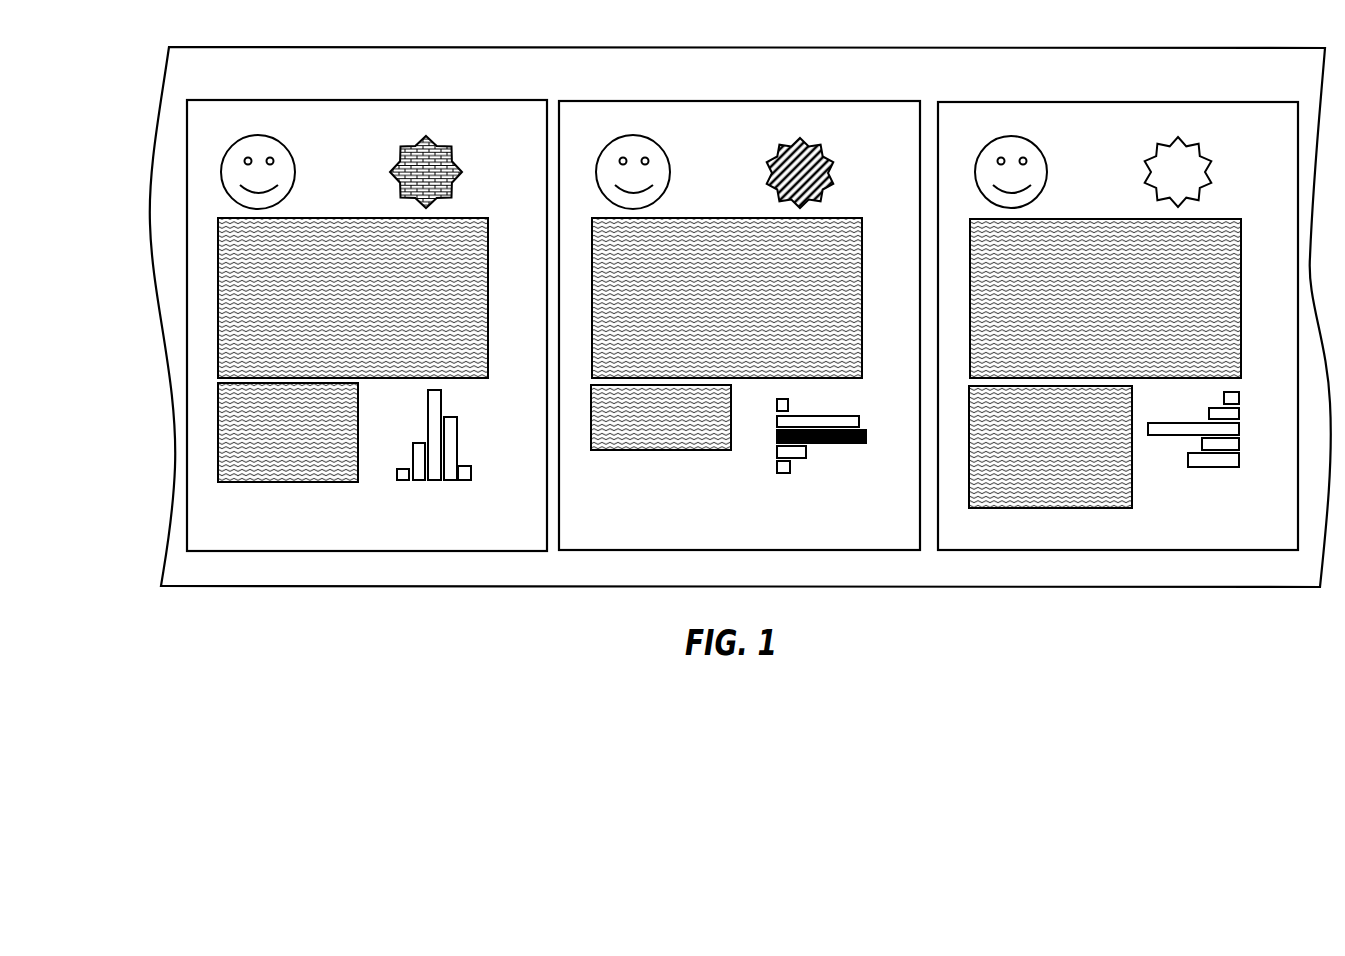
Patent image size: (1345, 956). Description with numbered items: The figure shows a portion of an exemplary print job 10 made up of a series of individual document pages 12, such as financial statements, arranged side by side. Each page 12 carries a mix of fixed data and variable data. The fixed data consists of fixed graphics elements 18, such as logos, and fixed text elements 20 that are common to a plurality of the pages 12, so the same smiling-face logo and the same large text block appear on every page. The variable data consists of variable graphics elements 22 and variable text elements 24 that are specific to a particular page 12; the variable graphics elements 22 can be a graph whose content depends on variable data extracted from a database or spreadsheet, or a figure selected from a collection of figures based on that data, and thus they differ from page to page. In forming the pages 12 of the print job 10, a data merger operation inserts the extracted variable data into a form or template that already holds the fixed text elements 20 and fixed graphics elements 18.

The print job 10 is at (264, 47).
The document page 12 is at (247, 100).
The fixed graphics element 18 is at (295, 160).
The fixed text element 20 is at (488, 295).
The variable graphics element 22 is at (436, 140).
The variable text element 24 is at (329, 482).